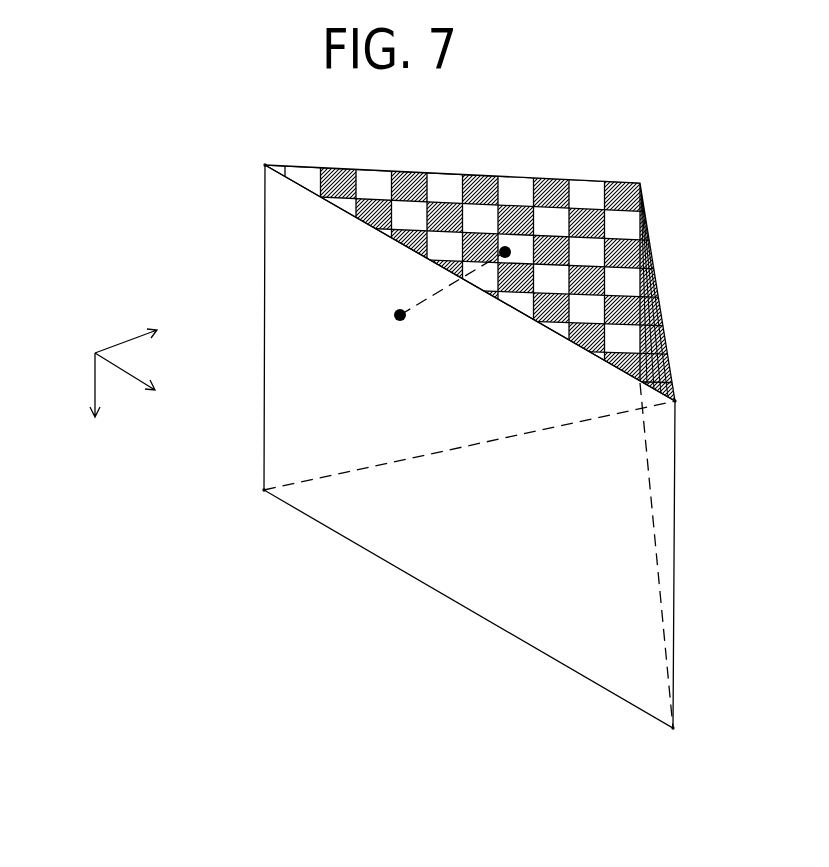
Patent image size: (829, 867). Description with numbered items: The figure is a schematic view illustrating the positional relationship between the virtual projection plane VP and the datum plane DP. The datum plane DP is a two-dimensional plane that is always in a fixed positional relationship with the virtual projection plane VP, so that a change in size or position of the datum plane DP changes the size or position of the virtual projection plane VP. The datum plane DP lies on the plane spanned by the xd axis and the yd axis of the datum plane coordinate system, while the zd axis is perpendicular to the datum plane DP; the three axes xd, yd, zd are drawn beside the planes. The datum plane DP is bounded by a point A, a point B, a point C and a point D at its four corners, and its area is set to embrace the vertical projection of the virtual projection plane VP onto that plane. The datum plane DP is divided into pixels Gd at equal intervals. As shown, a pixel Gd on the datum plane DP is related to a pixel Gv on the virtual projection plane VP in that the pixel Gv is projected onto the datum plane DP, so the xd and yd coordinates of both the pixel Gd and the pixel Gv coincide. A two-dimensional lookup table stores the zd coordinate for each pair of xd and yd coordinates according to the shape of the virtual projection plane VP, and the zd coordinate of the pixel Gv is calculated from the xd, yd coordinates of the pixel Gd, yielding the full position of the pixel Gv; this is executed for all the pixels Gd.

The virtual projection plane VP is at (409, 183).
The datum plane DP is at (447, 548).
The pixel on the virtual projection plane Gv is at (505, 246).
The pixel on the datum plane Gd is at (431, 315).
The point A is at (245, 156).
The point B is at (244, 491).
The point C is at (674, 755).
The point D is at (693, 400).
The xd axis xd is at (142, 385).
The yd axis yd is at (90, 405).
The zd axis zd is at (145, 329).